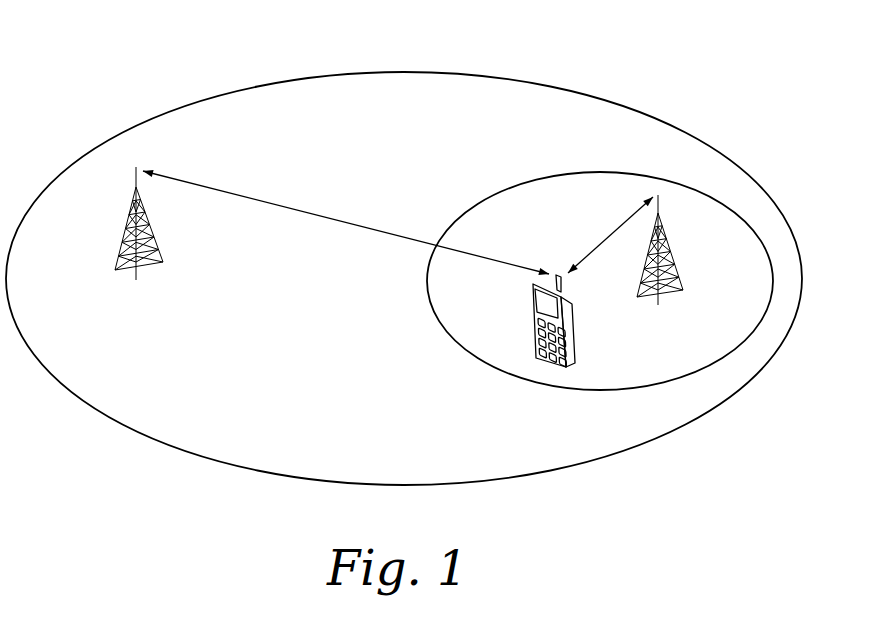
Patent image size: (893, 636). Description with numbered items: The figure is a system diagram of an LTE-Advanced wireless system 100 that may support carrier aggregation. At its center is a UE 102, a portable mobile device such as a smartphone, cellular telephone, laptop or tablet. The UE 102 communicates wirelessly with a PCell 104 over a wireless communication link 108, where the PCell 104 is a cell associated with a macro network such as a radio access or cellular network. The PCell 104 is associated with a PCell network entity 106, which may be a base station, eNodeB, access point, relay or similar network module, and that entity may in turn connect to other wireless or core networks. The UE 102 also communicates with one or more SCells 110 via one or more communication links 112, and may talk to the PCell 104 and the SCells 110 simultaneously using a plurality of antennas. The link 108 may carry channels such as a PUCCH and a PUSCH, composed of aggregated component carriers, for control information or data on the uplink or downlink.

The system 100 is at (591, 60).
The UE 102 is at (573, 328).
The PCell 104 is at (661, 121).
The PCell network entity 106 is at (124, 236).
The wireless communication link 108 is at (677, 246).
The SCell 110 is at (633, 172).
The communication link 112 is at (609, 237).